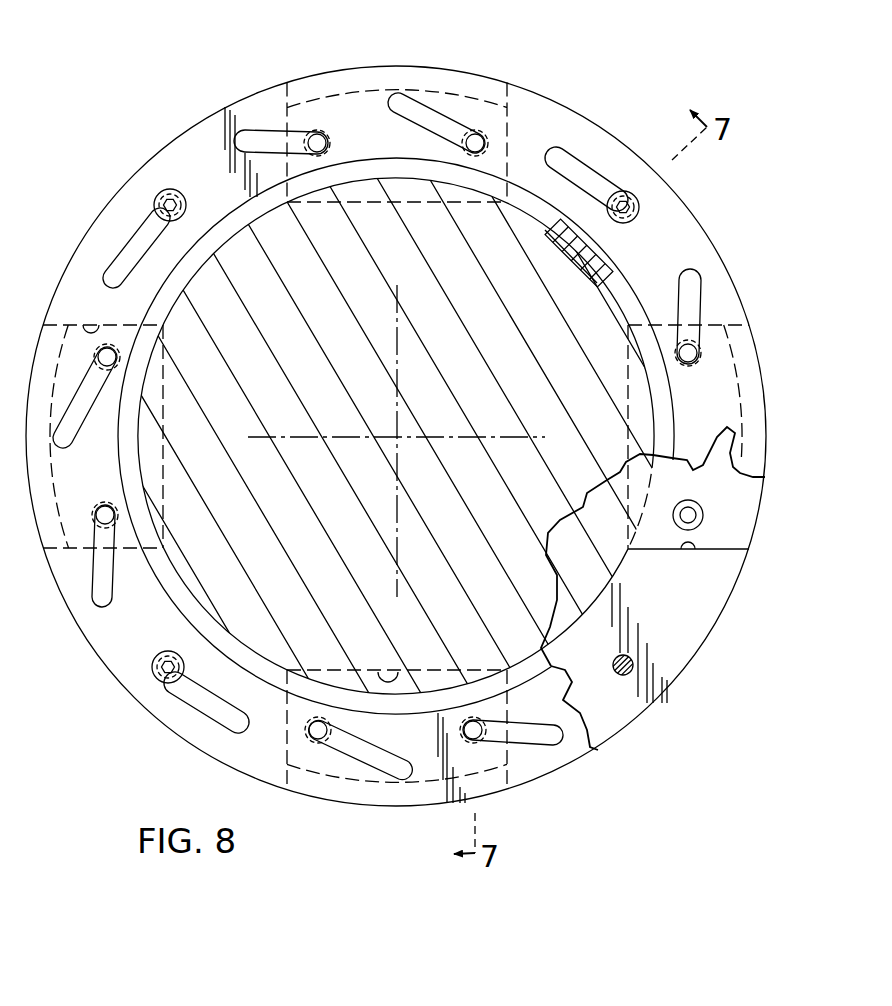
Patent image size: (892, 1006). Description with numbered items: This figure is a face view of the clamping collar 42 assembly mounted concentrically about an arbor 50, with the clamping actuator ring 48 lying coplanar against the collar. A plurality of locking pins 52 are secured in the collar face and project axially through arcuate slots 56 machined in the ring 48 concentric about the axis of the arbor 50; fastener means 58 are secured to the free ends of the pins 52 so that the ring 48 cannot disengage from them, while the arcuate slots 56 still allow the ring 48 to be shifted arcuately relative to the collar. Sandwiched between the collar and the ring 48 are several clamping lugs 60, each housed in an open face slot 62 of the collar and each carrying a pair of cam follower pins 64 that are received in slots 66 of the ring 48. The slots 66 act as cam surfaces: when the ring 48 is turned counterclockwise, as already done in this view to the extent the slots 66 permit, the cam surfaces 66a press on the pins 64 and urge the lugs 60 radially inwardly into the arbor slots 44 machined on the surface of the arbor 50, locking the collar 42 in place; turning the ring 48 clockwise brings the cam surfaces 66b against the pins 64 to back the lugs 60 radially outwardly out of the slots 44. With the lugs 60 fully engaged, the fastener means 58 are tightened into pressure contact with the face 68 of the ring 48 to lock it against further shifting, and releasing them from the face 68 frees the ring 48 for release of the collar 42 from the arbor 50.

The clamping collar 42 is at (553, 83).
The arbor slots 44 is at (640, 508).
The clamping actuator ring 48 is at (122, 663).
The arbor 50 is at (326, 566).
The locking pins 52 is at (158, 191).
The arcuate slots 56 is at (600, 173).
The fastener means 58 is at (645, 217).
The clamping lugs 60 is at (365, 107).
The open face slots 62 is at (88, 325).
The cam follower pins 64 is at (107, 513).
The slots 66 is at (71, 401).
The cam surfaces 66a is at (370, 767).
The cam surfaces 66b is at (685, 297).
The face of ring 68 is at (211, 179).